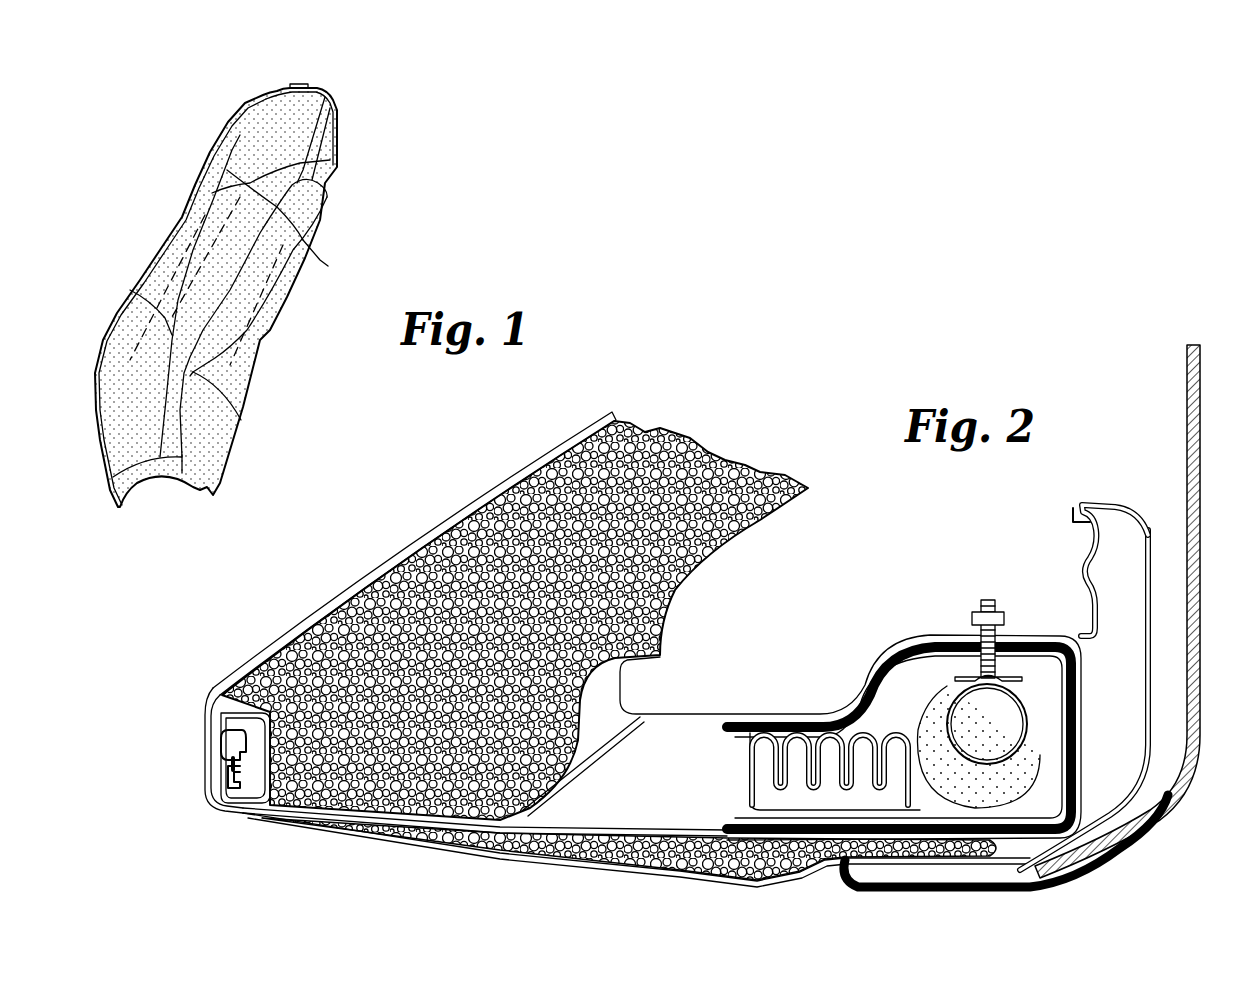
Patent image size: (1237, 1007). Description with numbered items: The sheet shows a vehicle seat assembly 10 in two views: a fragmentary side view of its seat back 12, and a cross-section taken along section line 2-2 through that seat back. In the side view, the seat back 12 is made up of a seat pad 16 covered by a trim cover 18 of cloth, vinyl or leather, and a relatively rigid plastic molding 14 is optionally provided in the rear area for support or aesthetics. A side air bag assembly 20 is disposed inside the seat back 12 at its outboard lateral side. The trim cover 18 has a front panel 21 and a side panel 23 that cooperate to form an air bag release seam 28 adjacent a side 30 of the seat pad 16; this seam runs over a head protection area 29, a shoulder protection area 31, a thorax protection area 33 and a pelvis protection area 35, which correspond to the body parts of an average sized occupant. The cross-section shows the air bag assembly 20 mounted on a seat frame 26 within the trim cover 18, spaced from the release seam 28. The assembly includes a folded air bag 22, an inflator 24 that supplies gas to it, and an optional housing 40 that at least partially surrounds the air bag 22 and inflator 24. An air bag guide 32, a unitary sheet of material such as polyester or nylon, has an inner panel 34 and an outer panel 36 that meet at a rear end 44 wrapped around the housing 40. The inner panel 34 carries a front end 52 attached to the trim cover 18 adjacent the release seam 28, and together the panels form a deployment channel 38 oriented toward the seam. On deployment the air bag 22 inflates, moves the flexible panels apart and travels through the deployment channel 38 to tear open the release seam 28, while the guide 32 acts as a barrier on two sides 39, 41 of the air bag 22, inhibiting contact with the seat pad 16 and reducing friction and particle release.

In FIG. 1, the seat assembly 10 is at (341, 86).
In FIG. 1, the seat back 12 is at (342, 120).
In FIG. 1, the plastic molding 14 is at (325, 207).
In FIG. 2, the plastic molding 14 is at (1152, 840).
In FIG. 1, the seat pad 16 is at (305, 84).
In FIG. 2, the seat pad 16 is at (562, 476).
In FIG. 1, the trim cover 18 is at (243, 296).
In FIG. 2, the trim cover 18 is at (432, 522).
In FIG. 1, the side air bag assembly 20 is at (266, 282).
In FIG. 2, the side air bag assembly 20 is at (1084, 661).
In FIG. 2, the front panel 21 is at (300, 636).
In FIG. 2, the air bag 22 is at (902, 816).
In FIG. 2, the side panel 23 is at (405, 835).
In FIG. 2, the inflator 24 is at (1050, 848).
In FIG. 2, the seat frame 26 is at (886, 656).
In FIG. 1, the air bag release seam 28 is at (190, 374).
In FIG. 2, the air bag release seam 28 is at (209, 762).
In FIG. 1, the head protection area 29 is at (247, 75).
In FIG. 2, the side of seat pad 30 is at (330, 660).
In FIG. 1, the shoulder protection area 31 is at (217, 143).
In FIG. 2, the air bag guide 32 is at (428, 796).
In FIG. 1, the thorax protection area 33 is at (150, 227).
In FIG. 2, the inner panel 34 is at (240, 700).
In FIG. 1, the pelvis protection area 35 is at (80, 340).
In FIG. 2, the outer panel 36 is at (280, 800).
In FIG. 2, the deployment channel 38 is at (570, 808).
In FIG. 2, the first side of air bag 39 is at (790, 730).
In FIG. 2, the housing 40 is at (950, 626).
In FIG. 2, the second side of air bag 41 is at (805, 845).
In FIG. 2, the rear end of air bag guide 44 is at (1082, 722).
In FIG. 2, the front end of inner panel 52 is at (240, 745).
In FIG. 1, the section line 2- 2 is at (95, 245).